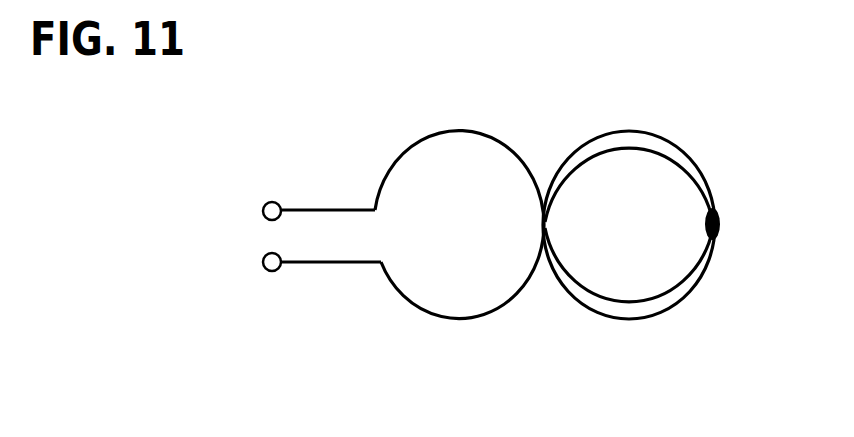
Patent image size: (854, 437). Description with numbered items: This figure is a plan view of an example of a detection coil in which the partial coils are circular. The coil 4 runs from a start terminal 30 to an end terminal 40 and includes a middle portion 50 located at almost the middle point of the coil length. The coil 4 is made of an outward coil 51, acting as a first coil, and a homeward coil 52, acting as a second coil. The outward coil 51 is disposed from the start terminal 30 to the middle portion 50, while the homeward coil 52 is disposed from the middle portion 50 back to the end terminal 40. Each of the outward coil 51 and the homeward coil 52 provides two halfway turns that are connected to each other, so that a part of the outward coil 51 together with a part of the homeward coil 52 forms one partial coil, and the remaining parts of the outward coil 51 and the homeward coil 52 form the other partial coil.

The coil 4 is at (406, 325).
The start terminal 30 is at (265, 204).
The end terminal 40 is at (265, 271).
The middle portion 50 is at (720, 222).
The outward coil 51 is at (620, 320).
The homeward coil 52 is at (608, 130).